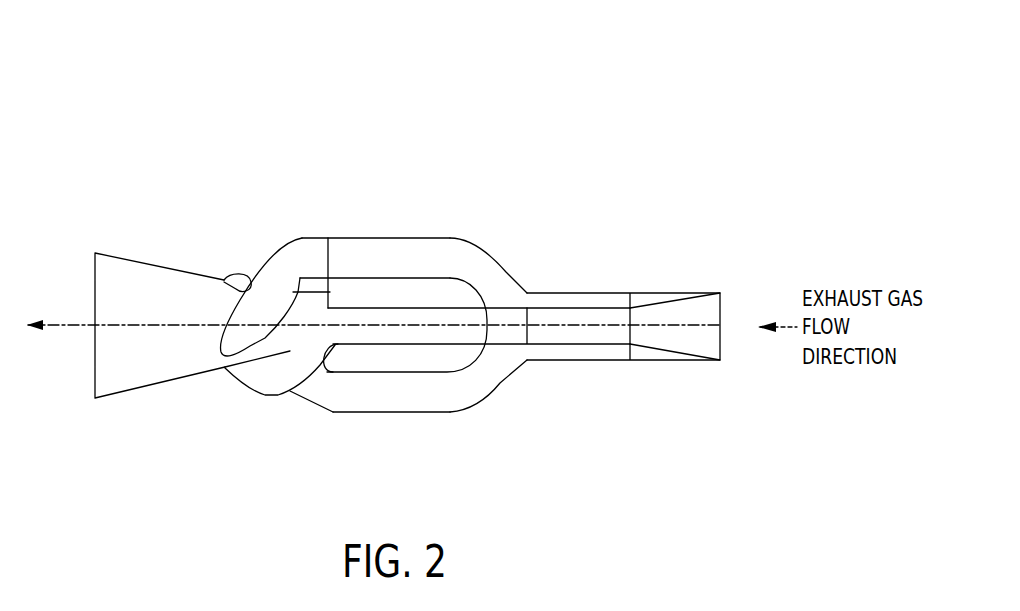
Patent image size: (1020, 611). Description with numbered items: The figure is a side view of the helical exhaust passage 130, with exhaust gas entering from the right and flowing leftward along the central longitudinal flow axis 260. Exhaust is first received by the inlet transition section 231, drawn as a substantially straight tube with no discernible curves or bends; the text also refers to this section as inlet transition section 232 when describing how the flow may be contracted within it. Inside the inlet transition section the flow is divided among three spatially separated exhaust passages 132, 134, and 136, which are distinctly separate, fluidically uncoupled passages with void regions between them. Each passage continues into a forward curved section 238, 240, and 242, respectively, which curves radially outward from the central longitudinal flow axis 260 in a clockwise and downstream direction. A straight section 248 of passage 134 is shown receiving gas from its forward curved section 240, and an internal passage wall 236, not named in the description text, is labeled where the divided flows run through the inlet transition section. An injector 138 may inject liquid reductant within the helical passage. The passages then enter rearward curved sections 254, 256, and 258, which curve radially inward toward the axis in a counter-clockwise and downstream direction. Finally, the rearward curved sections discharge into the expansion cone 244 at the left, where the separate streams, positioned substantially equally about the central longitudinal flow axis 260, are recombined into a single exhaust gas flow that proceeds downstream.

The helical exhaust passage 130 is at (208, 76).
The spatially separated exhaust passage 132 is at (425, 308).
The spatially separated exhaust passage 134 is at (452, 368).
The spatially separated exhaust passage 136 is at (445, 450).
The injector 138 is at (327, 308).
The inlet transition section 231 is at (610, 293).
The inlet transition section 232 is at (482, 416).
The inner pipe upper wall 236 is at (433, 308).
The forward curved section 238 is at (490, 256).
The forward curved section 240 is at (503, 308).
The forward curved section 242 is at (503, 378).
The expansion cone 244 is at (133, 261).
The straight section 248 is at (407, 238).
The rearward curved section 254 is at (302, 237).
The rearward curved section 256 is at (262, 395).
The rearward curved section 258 is at (333, 413).
The central longitudinal flow axis 260 is at (727, 325).